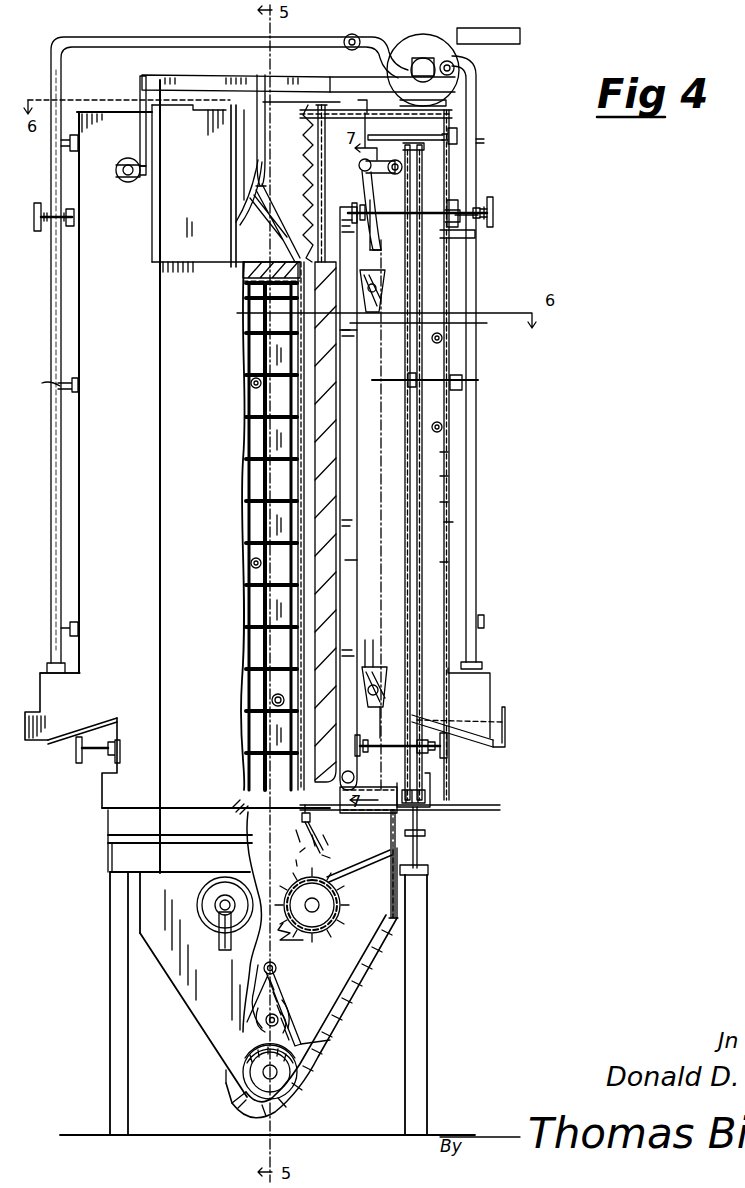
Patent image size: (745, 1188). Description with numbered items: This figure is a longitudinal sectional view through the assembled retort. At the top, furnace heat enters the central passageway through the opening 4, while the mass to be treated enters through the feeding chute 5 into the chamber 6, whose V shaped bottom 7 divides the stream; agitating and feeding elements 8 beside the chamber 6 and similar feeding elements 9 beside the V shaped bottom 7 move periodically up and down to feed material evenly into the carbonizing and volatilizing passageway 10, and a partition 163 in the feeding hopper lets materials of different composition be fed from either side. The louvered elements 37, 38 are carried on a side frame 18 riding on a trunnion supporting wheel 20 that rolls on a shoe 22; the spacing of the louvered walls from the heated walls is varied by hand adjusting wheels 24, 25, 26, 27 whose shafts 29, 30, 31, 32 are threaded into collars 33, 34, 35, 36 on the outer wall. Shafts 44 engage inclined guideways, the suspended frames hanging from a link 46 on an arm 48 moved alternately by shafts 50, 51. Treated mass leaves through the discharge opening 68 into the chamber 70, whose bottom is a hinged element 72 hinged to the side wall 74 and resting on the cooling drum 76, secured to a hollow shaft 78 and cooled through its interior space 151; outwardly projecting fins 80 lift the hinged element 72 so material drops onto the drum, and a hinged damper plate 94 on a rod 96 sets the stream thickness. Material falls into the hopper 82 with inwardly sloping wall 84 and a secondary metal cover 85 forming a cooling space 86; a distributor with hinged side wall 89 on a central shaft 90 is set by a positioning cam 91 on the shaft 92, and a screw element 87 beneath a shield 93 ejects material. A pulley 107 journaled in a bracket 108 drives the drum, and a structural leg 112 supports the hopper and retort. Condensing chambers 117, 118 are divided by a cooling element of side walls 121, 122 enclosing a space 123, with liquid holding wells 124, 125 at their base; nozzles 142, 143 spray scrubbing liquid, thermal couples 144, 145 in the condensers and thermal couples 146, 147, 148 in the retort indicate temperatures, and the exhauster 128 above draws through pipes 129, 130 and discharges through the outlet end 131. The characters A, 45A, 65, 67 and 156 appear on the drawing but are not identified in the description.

The opening 4 is at (265, 329).
The feeding chute 5 is at (232, 63).
The chamber 6 is at (276, 112).
The V shaped bottom 7 is at (268, 188).
The agitating and feeding elements 8 is at (212, 105).
The feeding elements 9 is at (257, 120).
The discharge chute A is at (273, 188).
The carbonizing and volatilizing passageway 10 is at (450, 357).
The side frame 18 is at (472, 427).
The trunnion supporting wheel 20 is at (360, 783).
The shoe 22 is at (420, 793).
The hand adjusting wheel 24 is at (455, 747).
The hand adjusting wheel 25 is at (496, 207).
The hand adjusting wheel 26 is at (80, 751).
The hand adjusting wheel 27 is at (36, 204).
The shaft 29 is at (482, 721).
The shaft 30 is at (462, 210).
The shaft 31 is at (56, 221).
The shaft 32 is at (88, 757).
The collar 33 is at (510, 719).
The collar 34 is at (496, 214).
The collar 35 is at (62, 211).
The collar 36 is at (110, 758).
The louvered element 37 is at (272, 493).
The louvered element 38 is at (300, 567).
The shaft 44 is at (440, 279).
The bracket 45A is at (386, 293).
The link 46 is at (478, 235).
The arm 48 is at (458, 134).
The shaft 50 is at (440, 165).
The shaft 51 is at (118, 173).
The roller 65 is at (134, 182).
The rod 67 is at (138, 93).
The discharge opening 68 is at (320, 814).
The chamber 70 is at (358, 843).
The hinged element 72 is at (430, 883).
The side wall 74 is at (410, 909).
The cooling drum 76 is at (340, 919).
The shaft 78 is at (317, 905).
The outwardly projecting fin 80 is at (219, 1007).
The hopper 82 is at (354, 967).
The inwardly sloping wall 84 is at (352, 1017).
The secondary metal cover 85 is at (318, 1077).
The space 86 is at (356, 1007).
The screw element 87 is at (262, 1089).
The hinged side wall 89 is at (302, 1043).
The central shaft 90 is at (276, 971).
The positioning cam 91 is at (274, 1016).
The shaft 92 is at (280, 1021).
The shield 93 is at (296, 1063).
The hinged damper plate 94 is at (306, 844).
The rod 96 is at (302, 818).
The pulley 107 is at (200, 908).
The bracket 108 is at (222, 953).
The structural leg 112 is at (430, 953).
The condensing chamber 117 is at (446, 527).
The condensing chamber 118 is at (442, 567).
The side wall 121 is at (442, 481).
The side wall 122 is at (442, 457).
The space 123 is at (442, 507).
The liquid holding well 124 is at (432, 805).
The liquid holding well 125 is at (507, 728).
The exhauster 128 is at (427, 44).
The pipe 129 is at (477, 103).
The pipe 130 is at (100, 43).
The outlet end 131 is at (502, 38).
The nozzle 142 is at (442, 430).
The nozzle 143 is at (442, 342).
The thermal couple 144 is at (482, 623).
The thermal couple 145 is at (80, 143).
The thermal couple 146 is at (270, 709).
The thermal couple 147 is at (270, 575).
The thermal couple 148 is at (250, 394).
The space 151 is at (270, 922).
The conveyor bar 156 is at (262, 413).
The partition 163 is at (265, 150).